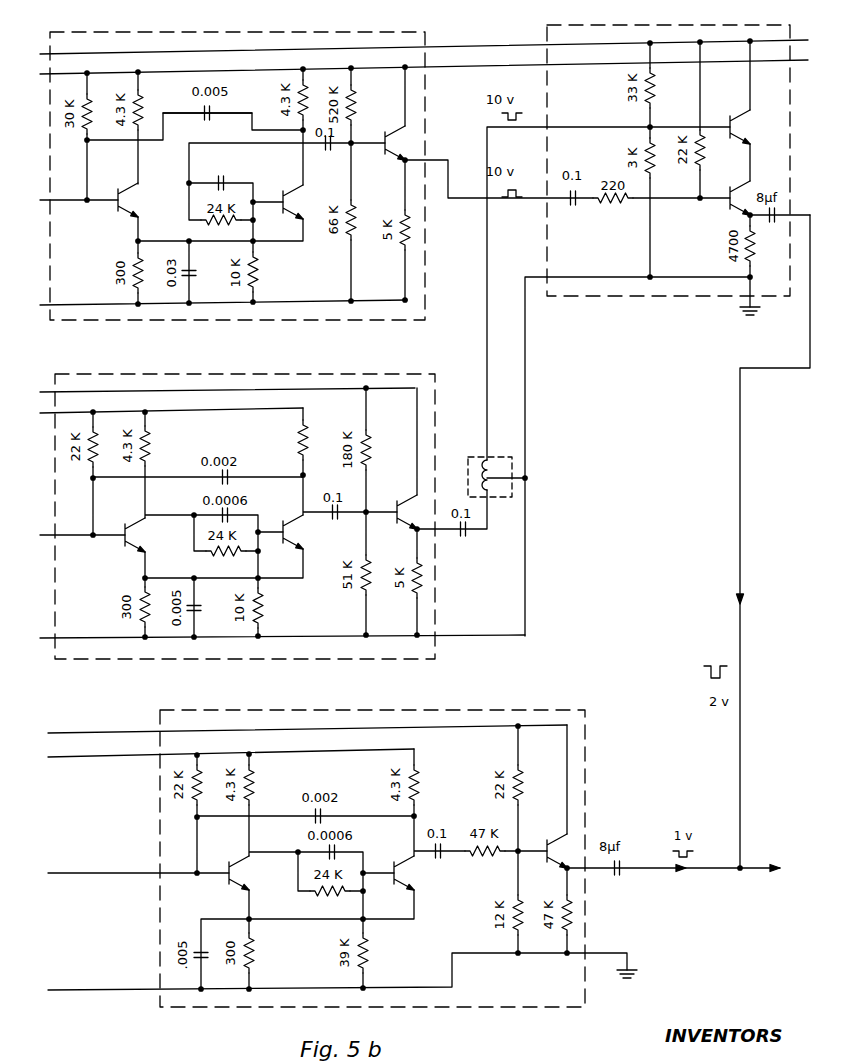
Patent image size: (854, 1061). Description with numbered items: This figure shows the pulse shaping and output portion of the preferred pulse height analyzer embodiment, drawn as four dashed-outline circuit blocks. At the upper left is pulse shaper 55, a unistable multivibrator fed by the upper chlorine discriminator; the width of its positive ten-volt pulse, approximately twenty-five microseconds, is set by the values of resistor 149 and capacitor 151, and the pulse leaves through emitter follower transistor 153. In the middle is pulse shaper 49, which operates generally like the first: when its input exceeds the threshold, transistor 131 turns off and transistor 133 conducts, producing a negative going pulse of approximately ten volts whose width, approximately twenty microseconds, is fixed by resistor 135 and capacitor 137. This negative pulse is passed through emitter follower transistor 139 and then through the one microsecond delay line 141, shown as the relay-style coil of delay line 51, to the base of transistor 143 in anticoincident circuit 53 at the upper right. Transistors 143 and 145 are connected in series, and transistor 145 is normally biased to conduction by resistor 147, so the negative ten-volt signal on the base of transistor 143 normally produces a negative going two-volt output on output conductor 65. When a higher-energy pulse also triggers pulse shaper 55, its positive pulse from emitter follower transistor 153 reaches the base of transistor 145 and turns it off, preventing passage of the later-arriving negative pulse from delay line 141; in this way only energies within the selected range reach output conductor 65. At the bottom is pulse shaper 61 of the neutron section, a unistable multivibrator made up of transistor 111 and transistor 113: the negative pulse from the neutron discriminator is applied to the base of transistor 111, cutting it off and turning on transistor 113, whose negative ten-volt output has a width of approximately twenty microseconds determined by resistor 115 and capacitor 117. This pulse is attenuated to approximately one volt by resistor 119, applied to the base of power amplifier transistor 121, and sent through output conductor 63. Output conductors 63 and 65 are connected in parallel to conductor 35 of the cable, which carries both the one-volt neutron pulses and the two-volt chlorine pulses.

The pulse shaper 55 is at (425, 35).
The anticoincident circuit 53 is at (545, 41).
The resistor 149 is at (85, 132).
The capacitor 151 is at (196, 114).
The emitter follower transistor 153 is at (386, 143).
The transistor 143 is at (734, 122).
The resistor 147 is at (704, 168).
The transistor 145 is at (734, 191).
The output conductor 65 is at (738, 512).
The delay line 51 is at (480, 457).
The delay line 141 is at (494, 500).
The emitter follower transistor 139 is at (398, 512).
The capacitor 137 is at (233, 470).
The resistor 135 is at (150, 446).
The transistor 131 is at (132, 536).
The transistor 133 is at (292, 533).
The pulse shaper 49 is at (163, 660).
The pulse shaper 61 is at (472, 710).
The resistor 115 is at (195, 813).
The capacitor 117 is at (313, 821).
The transistor 111 is at (239, 876).
The transistor 113 is at (405, 875).
The resistor 119 is at (468, 862).
The power amplifier transistor 121 is at (570, 846).
The output conductor 63 is at (645, 870).
The conductor 35 is at (756, 870).